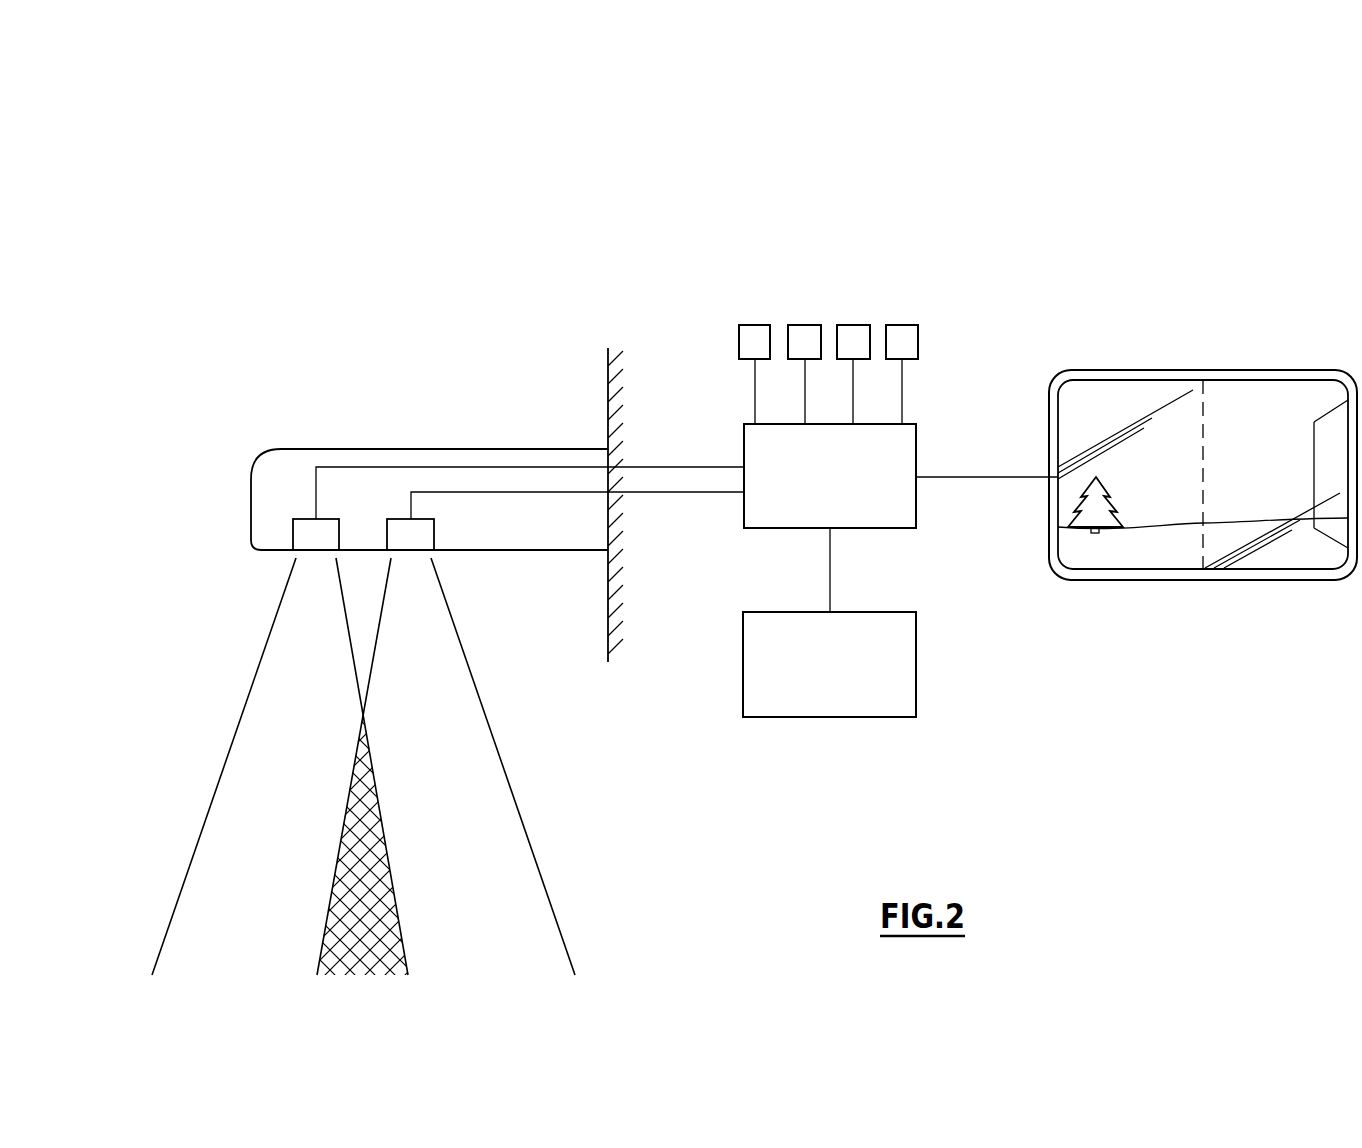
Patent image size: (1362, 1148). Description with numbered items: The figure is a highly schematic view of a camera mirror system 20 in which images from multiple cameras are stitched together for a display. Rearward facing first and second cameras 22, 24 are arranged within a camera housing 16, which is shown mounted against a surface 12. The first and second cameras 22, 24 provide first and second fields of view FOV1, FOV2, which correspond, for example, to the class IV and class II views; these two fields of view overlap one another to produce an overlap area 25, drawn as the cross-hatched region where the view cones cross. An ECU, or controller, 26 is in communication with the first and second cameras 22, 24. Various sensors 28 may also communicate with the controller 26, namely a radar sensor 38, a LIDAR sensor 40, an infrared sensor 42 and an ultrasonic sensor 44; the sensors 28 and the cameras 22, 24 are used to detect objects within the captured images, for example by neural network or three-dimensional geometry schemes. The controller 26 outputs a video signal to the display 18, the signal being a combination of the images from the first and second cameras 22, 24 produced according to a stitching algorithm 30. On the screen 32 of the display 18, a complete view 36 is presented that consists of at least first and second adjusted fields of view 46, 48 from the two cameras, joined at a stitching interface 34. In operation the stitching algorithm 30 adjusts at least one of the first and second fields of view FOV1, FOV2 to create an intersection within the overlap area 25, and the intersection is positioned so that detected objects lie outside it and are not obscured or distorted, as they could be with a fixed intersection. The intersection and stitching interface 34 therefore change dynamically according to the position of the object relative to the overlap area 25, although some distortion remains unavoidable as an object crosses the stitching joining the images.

The vehicle wall / mounting surface 12 is at (598, 372).
The camera housing 16 is at (329, 448).
The display 18 is at (1266, 356).
The camera mirror system 20 is at (946, 201).
The first camera 22 is at (309, 528).
The second camera 24 is at (424, 535).
The overlap area 25 is at (342, 895).
The ECU (controller) 26 is at (918, 443).
The sensors 28 is at (933, 272).
The stitching algorithm 30 is at (918, 635).
The screen 32 is at (1167, 405).
The stitching interface 34 is at (1205, 445).
The complete view 36 is at (1352, 603).
The radar sensor 38 is at (739, 348).
The LIDAR sensor 40 is at (808, 325).
The infrared sensor 42 is at (860, 325).
The ultrasonic sensor 44 is at (919, 340).
The first adjusted field of view 46 is at (1203, 675).
The second adjusted field of view 48 is at (1352, 675).
The first field of view FOV1 is at (176, 870).
The second field of view FOV2 is at (549, 870).